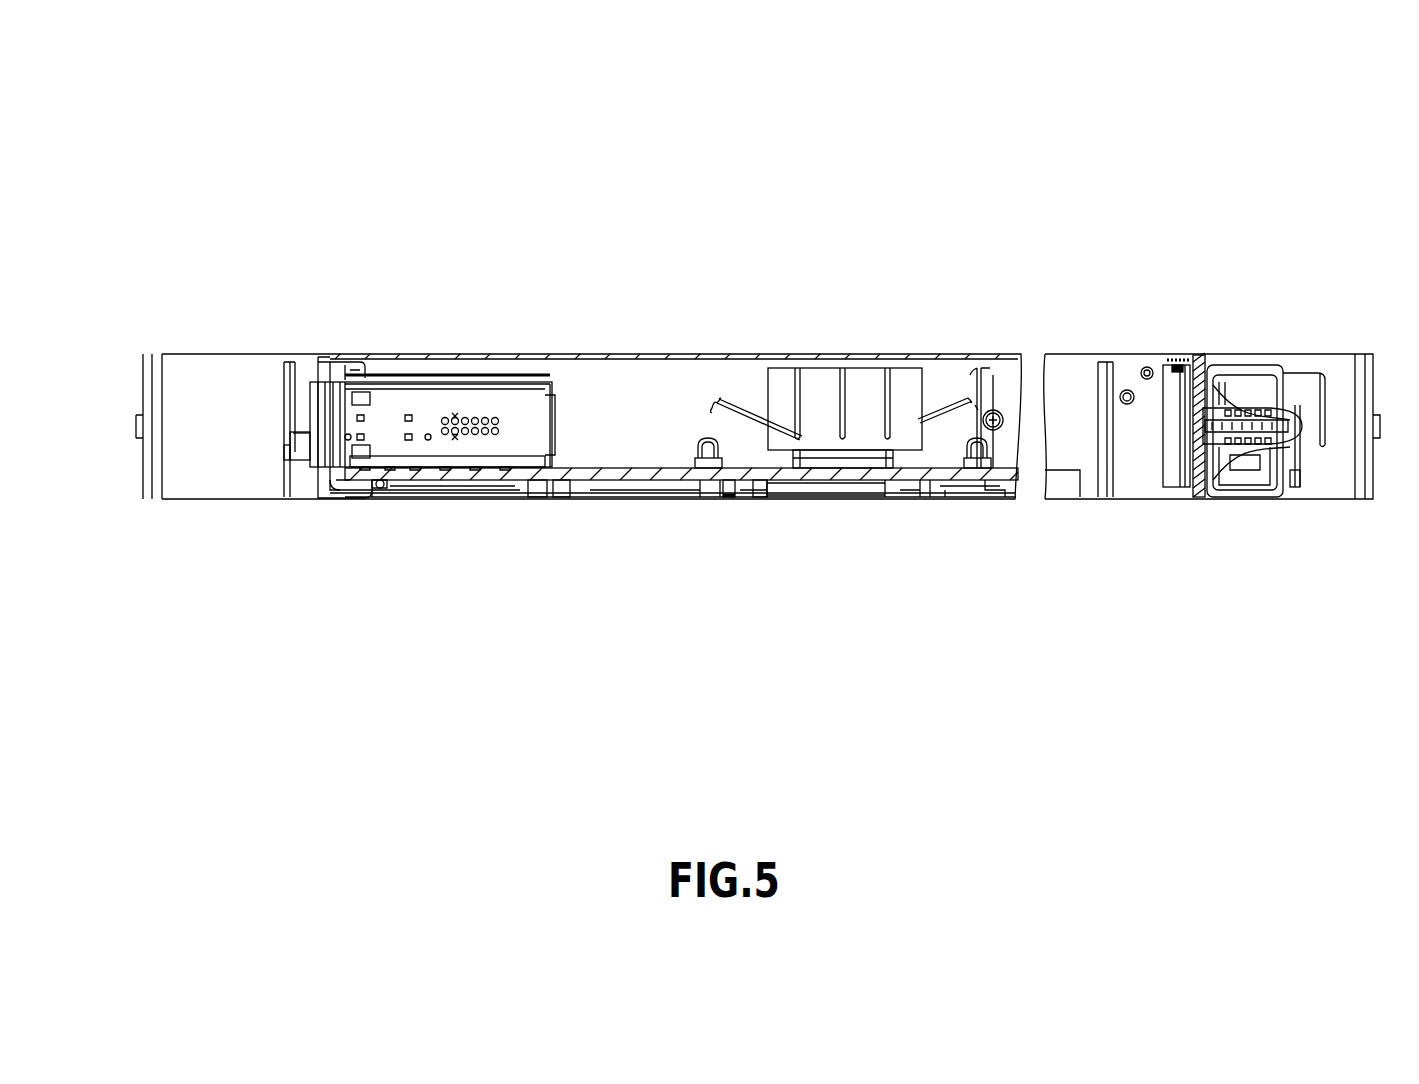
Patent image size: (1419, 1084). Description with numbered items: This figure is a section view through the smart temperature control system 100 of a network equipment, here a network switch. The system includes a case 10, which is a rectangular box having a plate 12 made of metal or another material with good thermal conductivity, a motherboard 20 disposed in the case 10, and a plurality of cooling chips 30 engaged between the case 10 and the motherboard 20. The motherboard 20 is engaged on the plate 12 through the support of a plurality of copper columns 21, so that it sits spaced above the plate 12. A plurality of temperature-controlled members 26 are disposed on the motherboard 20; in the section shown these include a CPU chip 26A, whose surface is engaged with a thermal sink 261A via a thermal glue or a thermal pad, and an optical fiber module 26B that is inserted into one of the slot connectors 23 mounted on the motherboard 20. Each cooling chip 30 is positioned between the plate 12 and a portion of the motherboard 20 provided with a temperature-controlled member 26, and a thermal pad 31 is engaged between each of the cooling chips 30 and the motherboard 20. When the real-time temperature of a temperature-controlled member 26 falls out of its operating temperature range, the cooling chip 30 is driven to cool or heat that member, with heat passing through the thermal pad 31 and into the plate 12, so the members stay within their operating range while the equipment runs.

The smart temperature control system 100 is at (550, 255).
The case 10 is at (627, 353).
The plate 12 is at (515, 499).
The motherboard 20 is at (943, 468).
The copper columns 21 is at (563, 488).
The slot connectors 23 is at (360, 357).
The temperature-controlled members 26 is at (290, 430).
The CPU chip 26A is at (857, 462).
The optical fiber module 26B is at (296, 456).
The thermal sink 261A is at (820, 388).
The cooling chips 30 is at (473, 490).
The thermal pad 31 is at (425, 480).